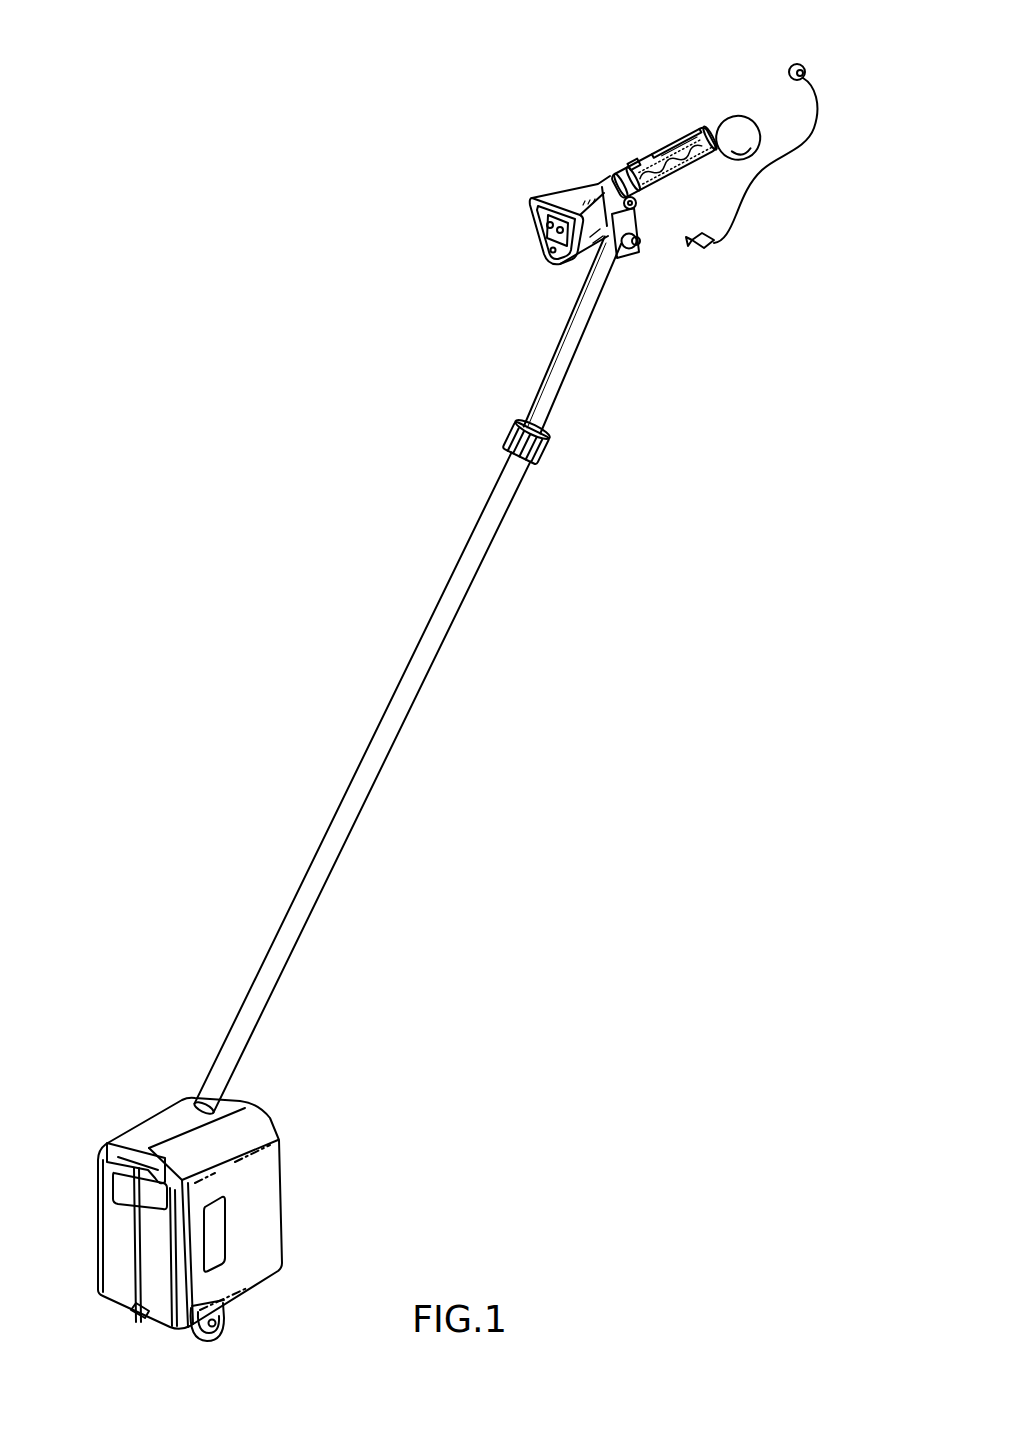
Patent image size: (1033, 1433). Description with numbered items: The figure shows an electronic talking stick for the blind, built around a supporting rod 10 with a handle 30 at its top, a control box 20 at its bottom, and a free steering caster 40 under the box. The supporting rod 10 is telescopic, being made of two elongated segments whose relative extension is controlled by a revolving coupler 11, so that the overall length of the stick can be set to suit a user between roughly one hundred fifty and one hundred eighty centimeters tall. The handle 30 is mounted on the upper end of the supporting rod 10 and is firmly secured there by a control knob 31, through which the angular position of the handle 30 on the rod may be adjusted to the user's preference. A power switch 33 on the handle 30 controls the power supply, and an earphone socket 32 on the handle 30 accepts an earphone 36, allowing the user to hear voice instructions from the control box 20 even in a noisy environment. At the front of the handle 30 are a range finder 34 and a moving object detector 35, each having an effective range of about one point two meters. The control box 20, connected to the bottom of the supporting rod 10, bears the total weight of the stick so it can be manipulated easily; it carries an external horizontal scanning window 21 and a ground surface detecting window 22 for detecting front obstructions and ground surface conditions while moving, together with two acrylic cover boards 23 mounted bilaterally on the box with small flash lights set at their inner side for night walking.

The supporting rod 10 is at (390, 730).
The revolving coupler 11 is at (540, 450).
The control box 20 is at (280, 1140).
The horizontal scanning window 21 is at (100, 1195).
The ground surface detecting window 22 is at (140, 1310).
The acrylic cover boards 23 is at (217, 1230).
The handle 30 is at (675, 147).
The control knob 31 is at (636, 255).
The earphone socket 32 is at (647, 213).
The power switch 33 is at (628, 163).
The range finder 34 is at (545, 226).
The moving object detector 35 is at (551, 251).
The earphone 36 is at (737, 208).
The free steering caster 40 is at (233, 1317).